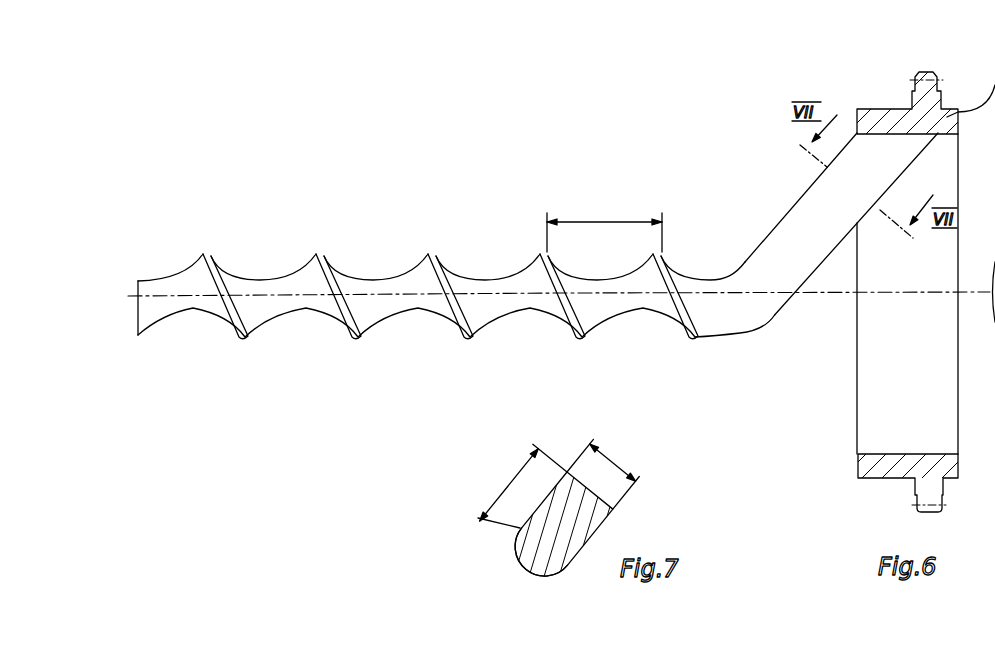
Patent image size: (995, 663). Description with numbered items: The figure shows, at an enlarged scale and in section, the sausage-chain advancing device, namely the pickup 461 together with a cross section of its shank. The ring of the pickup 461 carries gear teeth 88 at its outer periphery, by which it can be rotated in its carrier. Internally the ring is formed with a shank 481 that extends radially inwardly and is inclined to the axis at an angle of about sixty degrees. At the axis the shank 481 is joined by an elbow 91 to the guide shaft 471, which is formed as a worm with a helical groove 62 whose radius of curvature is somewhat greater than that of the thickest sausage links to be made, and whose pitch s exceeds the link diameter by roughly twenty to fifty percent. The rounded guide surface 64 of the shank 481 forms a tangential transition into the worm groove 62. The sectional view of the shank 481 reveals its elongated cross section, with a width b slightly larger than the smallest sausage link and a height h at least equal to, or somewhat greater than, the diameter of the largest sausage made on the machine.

In FIG. 6, the helical groove 62 is at (417, 313).
In FIG. 6, the guide shaft 471 is at (328, 250).
In FIG. 6, the pickup 461 is at (594, 200).
In FIG. 6, the elbow 91 is at (730, 285).
In FIG. 6, the shank 481 is at (813, 203).
In FIG. 7, the shank 481 is at (584, 530).
In FIG. 6, the gear teeth 88 is at (918, 74).
In FIG. 7, the rounded guide surface 64 is at (540, 572).